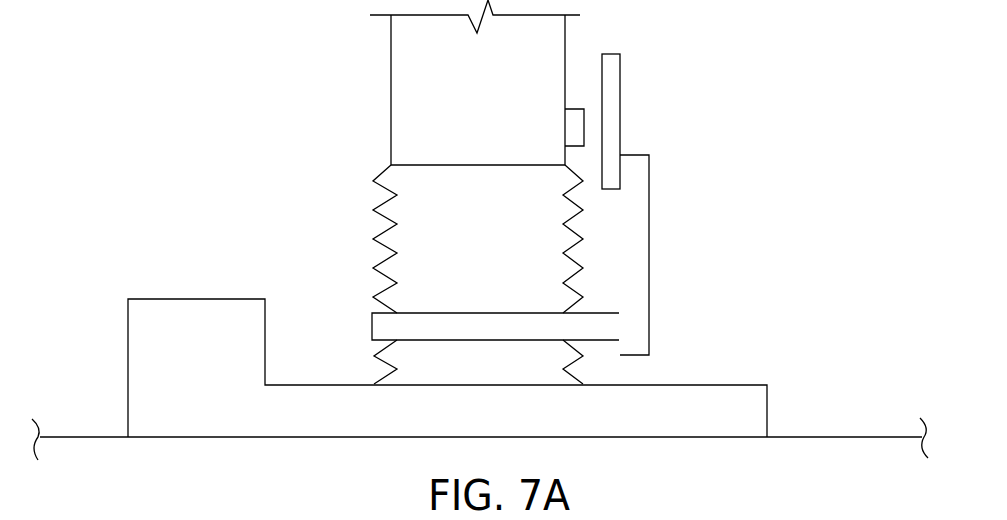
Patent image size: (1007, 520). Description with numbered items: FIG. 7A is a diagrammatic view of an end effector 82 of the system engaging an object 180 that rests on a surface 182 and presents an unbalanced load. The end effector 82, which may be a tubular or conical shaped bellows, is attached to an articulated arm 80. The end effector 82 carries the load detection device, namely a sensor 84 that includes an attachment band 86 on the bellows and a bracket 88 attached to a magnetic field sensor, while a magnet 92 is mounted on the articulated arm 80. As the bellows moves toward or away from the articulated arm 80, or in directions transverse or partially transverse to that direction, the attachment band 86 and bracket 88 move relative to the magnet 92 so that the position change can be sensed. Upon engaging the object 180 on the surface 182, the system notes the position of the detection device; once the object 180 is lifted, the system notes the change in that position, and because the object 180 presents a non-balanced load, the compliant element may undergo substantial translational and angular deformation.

The articulated arm 80 is at (391, 86).
The end effector 82 is at (375, 211).
The sensor 84 is at (620, 112).
The attachment band 86 is at (372, 328).
The bracket 88 is at (649, 311).
The magnet 92 is at (565, 126).
The object 180 is at (206, 298).
The surface 182 is at (91, 436).